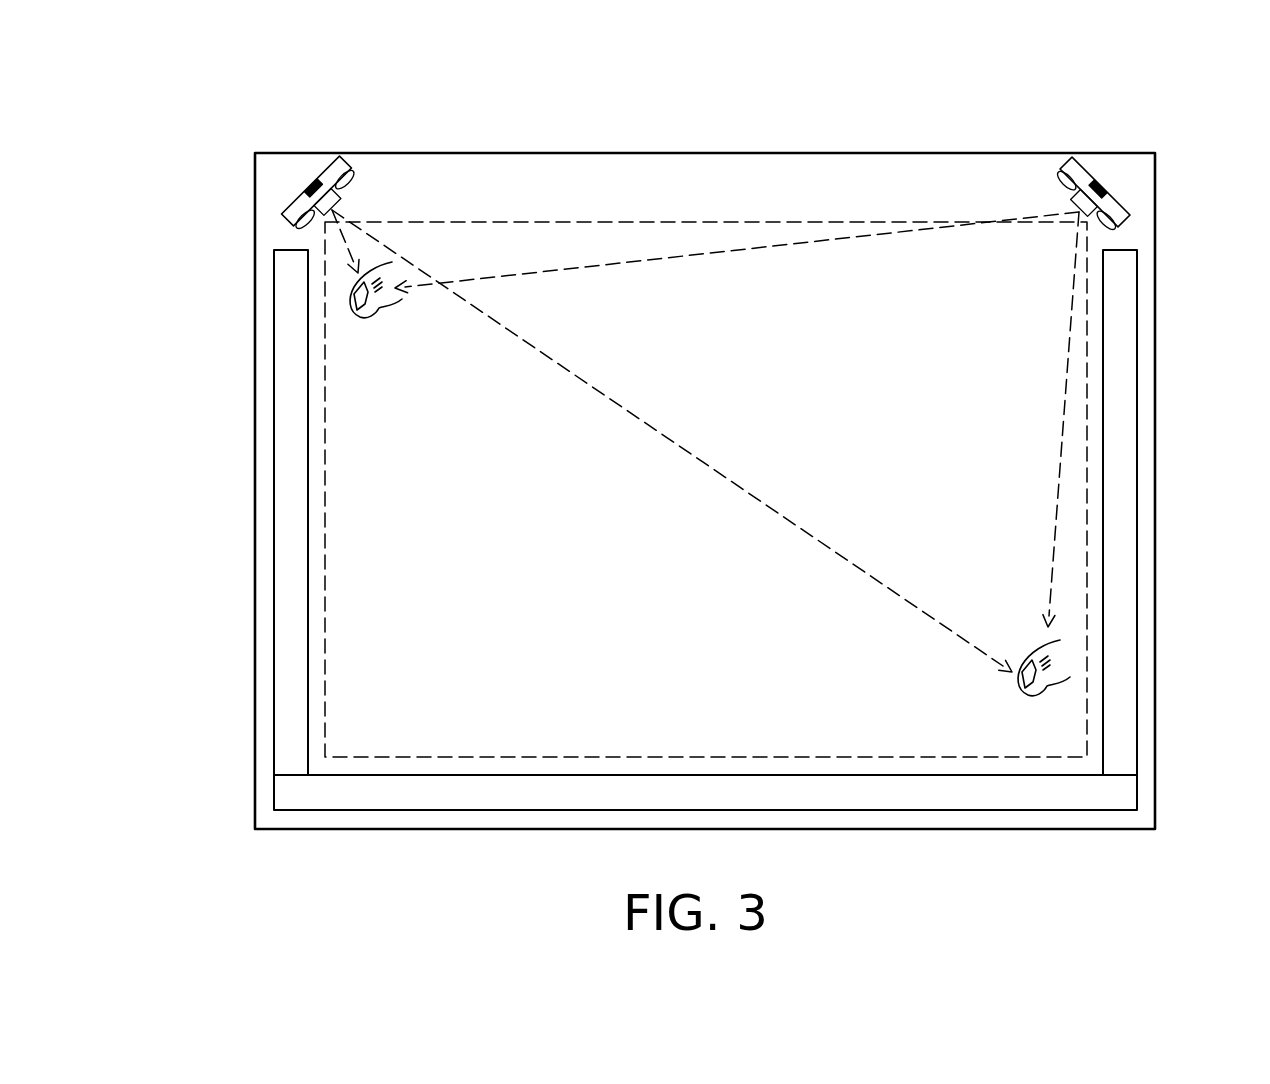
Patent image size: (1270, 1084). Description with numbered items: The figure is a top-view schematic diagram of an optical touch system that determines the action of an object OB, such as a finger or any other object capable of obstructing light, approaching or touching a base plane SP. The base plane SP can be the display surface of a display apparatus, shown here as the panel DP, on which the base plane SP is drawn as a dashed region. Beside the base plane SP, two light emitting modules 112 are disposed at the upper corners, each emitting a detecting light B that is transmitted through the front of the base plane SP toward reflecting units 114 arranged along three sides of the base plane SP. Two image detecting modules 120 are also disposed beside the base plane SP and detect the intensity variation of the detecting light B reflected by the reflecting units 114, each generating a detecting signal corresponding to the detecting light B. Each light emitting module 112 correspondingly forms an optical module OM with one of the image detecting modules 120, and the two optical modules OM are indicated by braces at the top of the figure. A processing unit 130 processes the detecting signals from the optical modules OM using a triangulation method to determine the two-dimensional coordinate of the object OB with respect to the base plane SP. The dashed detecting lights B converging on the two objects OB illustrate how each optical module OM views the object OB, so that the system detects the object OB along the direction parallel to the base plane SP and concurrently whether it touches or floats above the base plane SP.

The light emitting module 112 is at (330, 203).
The reflecting unit 114 is at (282, 494).
The image detecting module 120 is at (350, 174).
The processing unit 130 is at (312, 183).
The optical module OM is at (490, 68).
The display panel DP is at (671, 168).
The base plane SP is at (1087, 447).
The object OB is at (380, 320).
The detecting light B is at (348, 252).